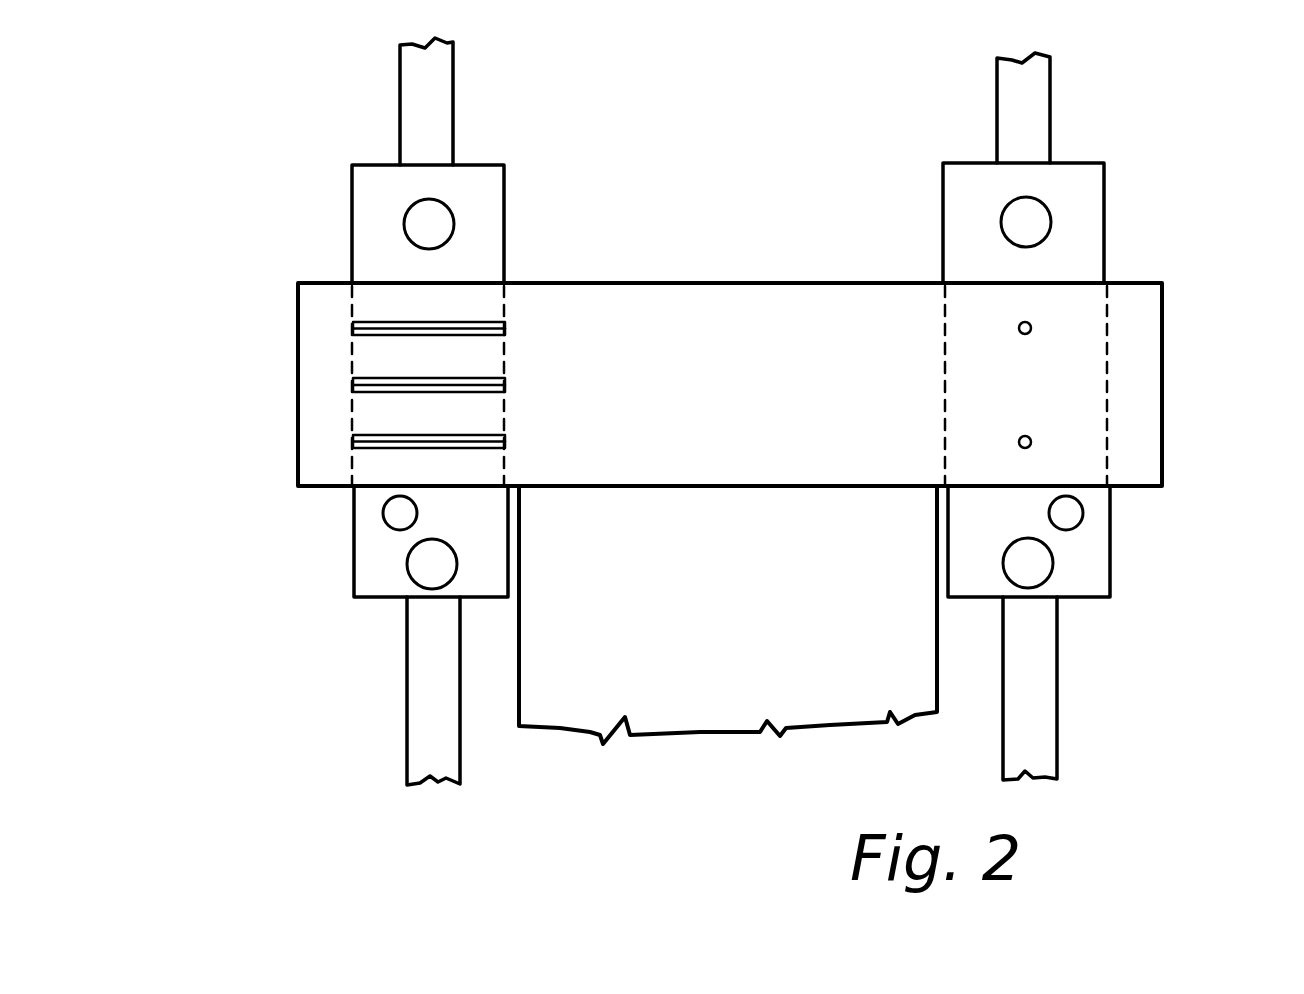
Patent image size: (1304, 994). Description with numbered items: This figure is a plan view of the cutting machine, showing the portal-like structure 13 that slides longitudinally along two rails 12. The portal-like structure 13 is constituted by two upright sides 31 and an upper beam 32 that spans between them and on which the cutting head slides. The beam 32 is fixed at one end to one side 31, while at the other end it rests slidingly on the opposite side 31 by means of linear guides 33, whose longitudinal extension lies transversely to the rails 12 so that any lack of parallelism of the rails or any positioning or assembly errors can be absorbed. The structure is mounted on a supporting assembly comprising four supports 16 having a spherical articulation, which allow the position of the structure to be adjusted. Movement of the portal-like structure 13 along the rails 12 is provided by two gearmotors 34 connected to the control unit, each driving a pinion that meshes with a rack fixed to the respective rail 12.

The rails 12 is at (415, 742).
The portal-like structure 13 is at (1125, 633).
The supports 16 is at (404, 224).
The upright sides 31 is at (490, 188).
The upper beam 32 is at (1143, 382).
The linear guides 33 is at (355, 330).
The gearmotors 34 is at (385, 520).